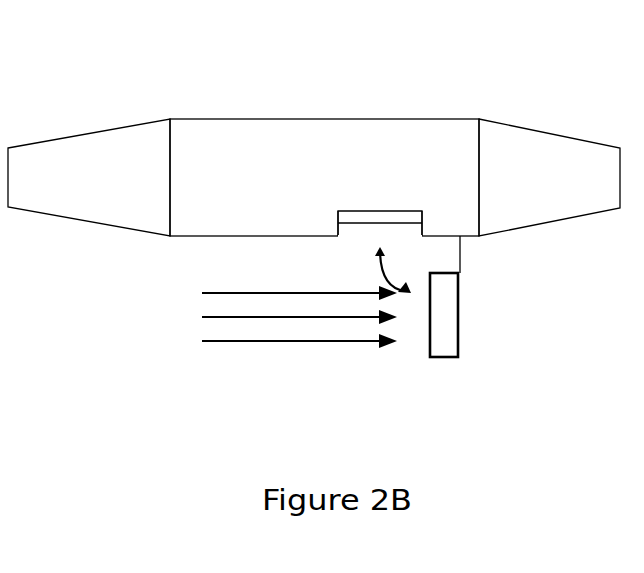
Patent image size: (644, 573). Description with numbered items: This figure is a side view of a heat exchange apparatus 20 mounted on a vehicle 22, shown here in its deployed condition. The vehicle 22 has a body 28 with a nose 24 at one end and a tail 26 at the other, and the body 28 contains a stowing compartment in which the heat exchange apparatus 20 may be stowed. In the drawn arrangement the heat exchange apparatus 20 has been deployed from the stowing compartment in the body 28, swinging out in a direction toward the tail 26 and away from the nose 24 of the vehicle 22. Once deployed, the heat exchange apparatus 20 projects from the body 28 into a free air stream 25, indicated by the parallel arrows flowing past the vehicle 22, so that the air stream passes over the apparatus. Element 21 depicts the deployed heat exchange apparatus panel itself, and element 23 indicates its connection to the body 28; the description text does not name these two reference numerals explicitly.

The heat exchange apparatus 20 is at (487, 333).
The light blocking plate 21 is at (430, 347).
The vehicle 22 is at (335, 46).
The support stem 23 is at (462, 263).
The nose 24 is at (105, 130).
The free air stream 25 is at (275, 342).
The tail 26 is at (538, 132).
The body 28 is at (405, 119).